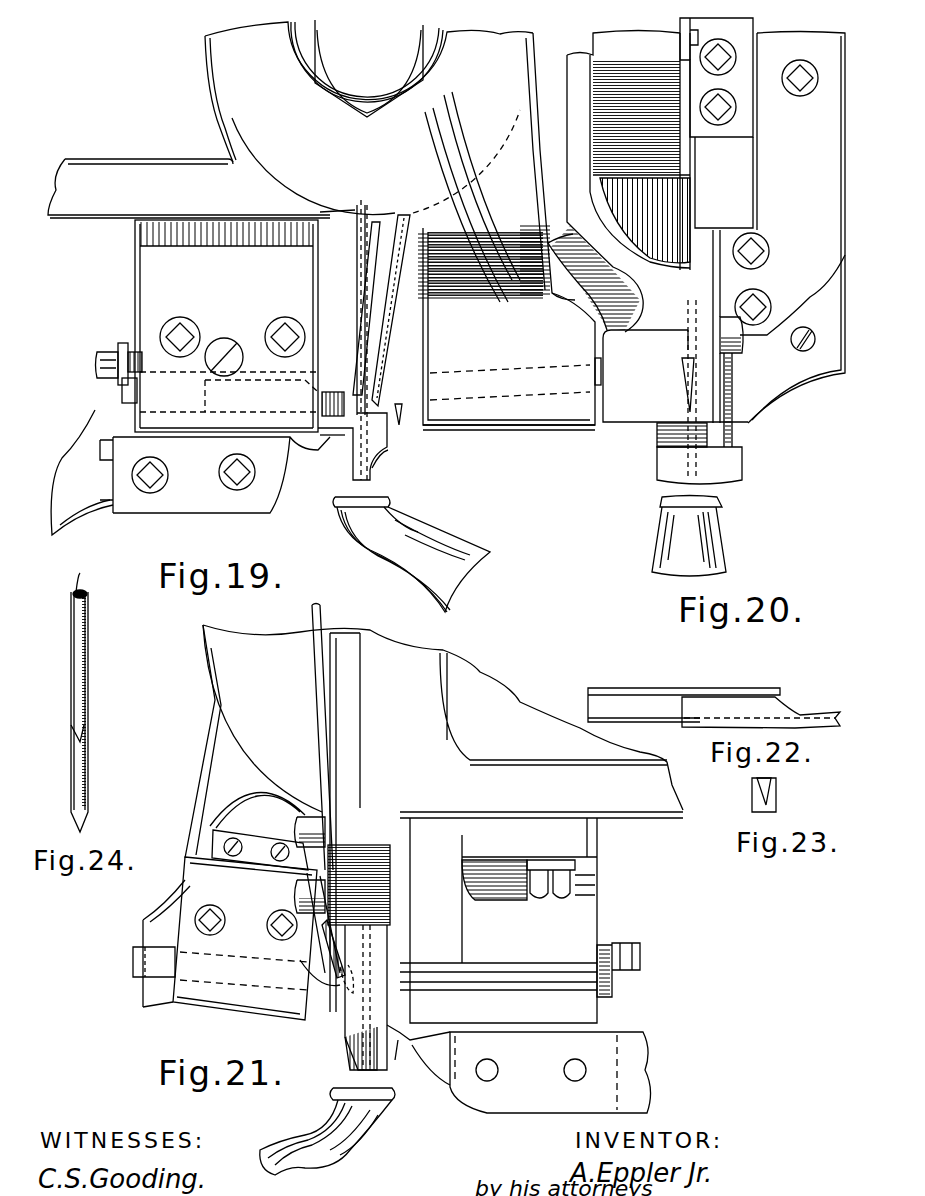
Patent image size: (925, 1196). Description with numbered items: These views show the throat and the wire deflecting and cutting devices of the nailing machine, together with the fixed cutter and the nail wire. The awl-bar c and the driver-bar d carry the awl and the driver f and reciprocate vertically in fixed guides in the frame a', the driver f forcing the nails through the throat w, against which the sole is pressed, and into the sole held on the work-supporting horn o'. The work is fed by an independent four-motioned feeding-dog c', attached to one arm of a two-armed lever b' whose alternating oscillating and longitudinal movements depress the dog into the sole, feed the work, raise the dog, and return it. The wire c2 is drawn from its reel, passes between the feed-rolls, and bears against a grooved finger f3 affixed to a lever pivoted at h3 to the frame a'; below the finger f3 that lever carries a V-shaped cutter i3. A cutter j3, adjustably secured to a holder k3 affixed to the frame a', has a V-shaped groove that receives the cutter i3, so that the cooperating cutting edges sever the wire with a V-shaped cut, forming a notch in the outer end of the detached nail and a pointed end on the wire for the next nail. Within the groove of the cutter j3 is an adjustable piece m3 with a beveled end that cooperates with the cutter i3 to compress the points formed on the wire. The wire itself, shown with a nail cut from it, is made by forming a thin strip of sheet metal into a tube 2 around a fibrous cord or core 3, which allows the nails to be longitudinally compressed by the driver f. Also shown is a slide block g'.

In FIG. 19, the frame a' is at (189, 188).
In FIG. 21, the frame a' is at (413, 824).
In FIG. 19, the two-armed lever b' is at (190, 472).
In FIG. 21, the two-armed lever b' is at (550, 1072).
In FIG. 20, the awl-bar c is at (789, 228).
In FIG. 19, the feeding-dog c' is at (352, 449).
In FIG. 21, the feeding-dog c' is at (418, 1055).
In FIG. 19, the wire c2 is at (388, 395).
In FIG. 21, the wire c2 is at (316, 716).
In FIG. 24, the wire c2 is at (86, 668).
In FIG. 20, the driver-bar d is at (716, 123).
In FIG. 19, the driver f is at (365, 350).
In FIG. 19, the grooved finger f3 is at (385, 345).
In FIG. 21, the grooved finger f3 is at (330, 942).
In FIG. 19, the slide block g' is at (512, 329).
In FIG. 19, the pivot h3 is at (390, 161).
In FIG. 19, the V-shaped cutter i3 is at (399, 425).
In FIG. 20, the V-shaped cutter i3 is at (682, 372).
In FIG. 21, the V-shaped cutter i3 is at (318, 978).
In FIG. 19, the cutter j3 is at (336, 400).
In FIG. 22, the cutter j3 is at (790, 708).
In FIG. 23, the cutter j3 is at (776, 795).
In FIG. 19, the holder k3 is at (227, 326).
In FIG. 21, the holder k3 is at (225, 938).
In FIG. 19, the adjustable piece m3 is at (122, 373).
In FIG. 22, the adjustable piece m3 is at (745, 688).
In FIG. 23, the adjustable piece m3 is at (757, 780).
In FIG. 19, the throat w is at (375, 470).
In FIG. 20, the throat w is at (668, 465).
In FIG. 21, the throat w is at (355, 1050).
In FIG. 21, the work-supporting horn o' is at (327, 1131).
In FIG. 24, the tube 2 is at (88, 594).
In FIG. 24, the fibrous cord or core 3 is at (84, 577).